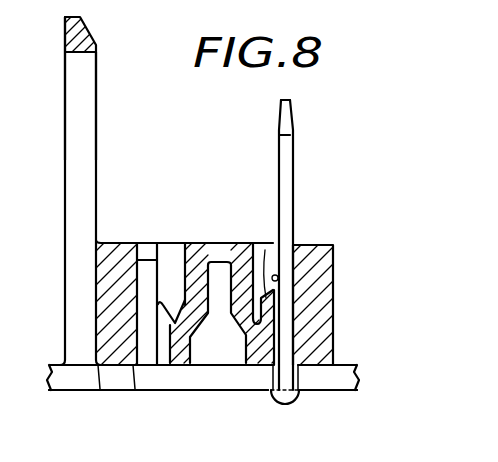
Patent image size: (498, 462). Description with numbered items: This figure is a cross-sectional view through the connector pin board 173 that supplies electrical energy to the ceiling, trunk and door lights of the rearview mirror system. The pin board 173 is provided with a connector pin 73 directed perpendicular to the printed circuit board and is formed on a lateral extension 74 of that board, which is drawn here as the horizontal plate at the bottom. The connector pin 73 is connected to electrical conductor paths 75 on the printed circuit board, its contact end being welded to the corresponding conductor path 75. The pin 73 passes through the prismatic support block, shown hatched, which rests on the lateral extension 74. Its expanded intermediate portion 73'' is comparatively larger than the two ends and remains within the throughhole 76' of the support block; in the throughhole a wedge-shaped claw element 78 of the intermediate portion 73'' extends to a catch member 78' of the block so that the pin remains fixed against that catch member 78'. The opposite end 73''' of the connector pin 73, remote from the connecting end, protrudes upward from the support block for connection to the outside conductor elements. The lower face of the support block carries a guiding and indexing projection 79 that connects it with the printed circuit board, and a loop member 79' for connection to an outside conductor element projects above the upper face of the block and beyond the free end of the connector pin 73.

The guiding and indexing projection 79 is at (106, 225).
The loop member 79' is at (96, 91).
The lateral extension 74 is at (358, 388).
The electrical conductor paths 75 is at (337, 393).
The throughhole 76' is at (235, 302).
The claw element 78 is at (264, 259).
The catch member 78' is at (204, 288).
The connector pin 73 is at (244, 350).
The intermediate portion 73'' is at (311, 286).
The opposite end 73''' is at (321, 171).
The connector pin board 173 is at (300, 94).